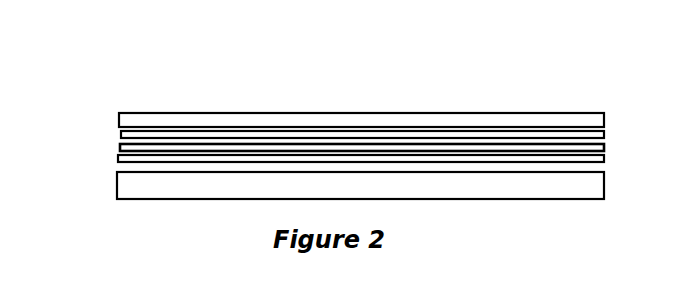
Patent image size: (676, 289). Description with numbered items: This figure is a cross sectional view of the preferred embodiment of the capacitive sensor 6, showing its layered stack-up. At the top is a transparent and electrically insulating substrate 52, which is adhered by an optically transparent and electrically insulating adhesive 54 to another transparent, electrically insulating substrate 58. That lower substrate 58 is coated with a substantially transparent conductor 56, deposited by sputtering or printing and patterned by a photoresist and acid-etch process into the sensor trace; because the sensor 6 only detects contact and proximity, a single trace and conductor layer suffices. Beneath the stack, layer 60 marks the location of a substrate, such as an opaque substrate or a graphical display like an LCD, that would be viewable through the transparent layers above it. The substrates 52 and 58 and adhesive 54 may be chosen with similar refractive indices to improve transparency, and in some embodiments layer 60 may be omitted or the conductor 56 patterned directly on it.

The capacitive sensor 6 is at (318, 82).
The top transparent and electrically insulating substrate 52 is at (118, 120).
The optically transparent and electrically insulating adhesive 54 is at (120, 137).
The transparent conductor 56 is at (118, 146).
The transparent electrically insulating substrate 58 is at (116, 158).
The substrate layer 60 is at (117, 188).